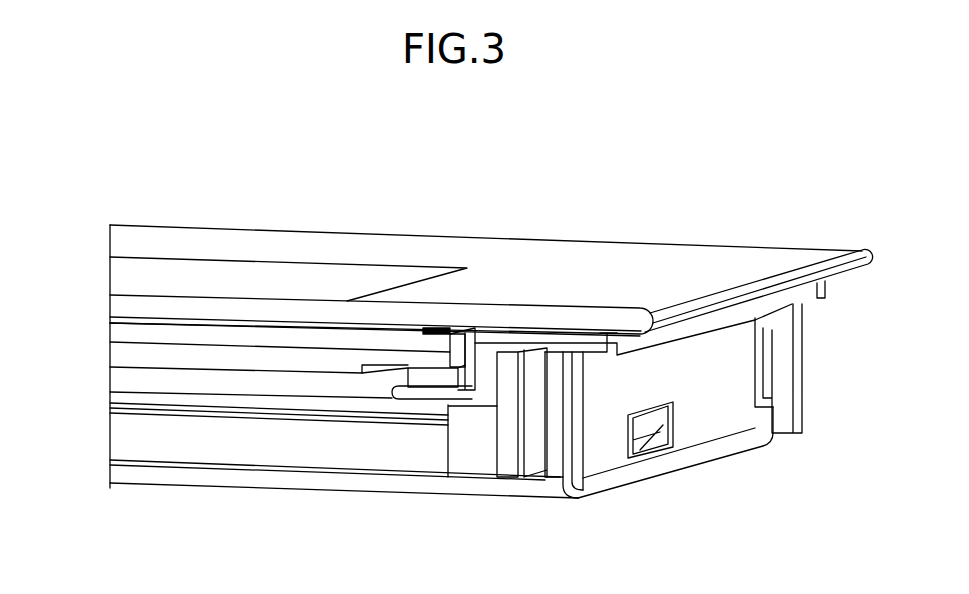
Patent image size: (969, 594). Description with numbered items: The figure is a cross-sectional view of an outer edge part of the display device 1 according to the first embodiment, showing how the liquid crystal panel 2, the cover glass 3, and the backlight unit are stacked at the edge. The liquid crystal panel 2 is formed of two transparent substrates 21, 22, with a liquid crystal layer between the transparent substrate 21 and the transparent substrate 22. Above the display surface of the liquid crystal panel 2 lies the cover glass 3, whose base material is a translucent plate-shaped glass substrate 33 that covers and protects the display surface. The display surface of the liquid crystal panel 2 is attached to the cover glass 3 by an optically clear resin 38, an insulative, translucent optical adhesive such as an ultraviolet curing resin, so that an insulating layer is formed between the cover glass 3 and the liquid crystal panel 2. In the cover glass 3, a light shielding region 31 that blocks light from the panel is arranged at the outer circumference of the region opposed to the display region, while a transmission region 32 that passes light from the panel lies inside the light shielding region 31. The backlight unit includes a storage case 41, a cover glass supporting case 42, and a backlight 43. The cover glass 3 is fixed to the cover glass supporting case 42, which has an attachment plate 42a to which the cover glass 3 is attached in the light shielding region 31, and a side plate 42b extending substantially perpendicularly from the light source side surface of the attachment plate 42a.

The display device 1 is at (784, 207).
The liquid crystal panel 2 is at (57, 323).
The cover glass 3 is at (645, 259).
The transparent substrate 21 is at (113, 335).
The transparent substrate 22 is at (113, 357).
The light shielding region 31 is at (545, 250).
The transmission region 32 is at (323, 280).
The glass substrate 33 is at (112, 305).
The optically clear resin 38 is at (113, 321).
The storage case 41 is at (713, 418).
The cover glass supporting case 42 is at (555, 358).
The attachment plate 42a is at (607, 343).
The side plate 42b is at (555, 465).
The backlight 43 is at (107, 390).